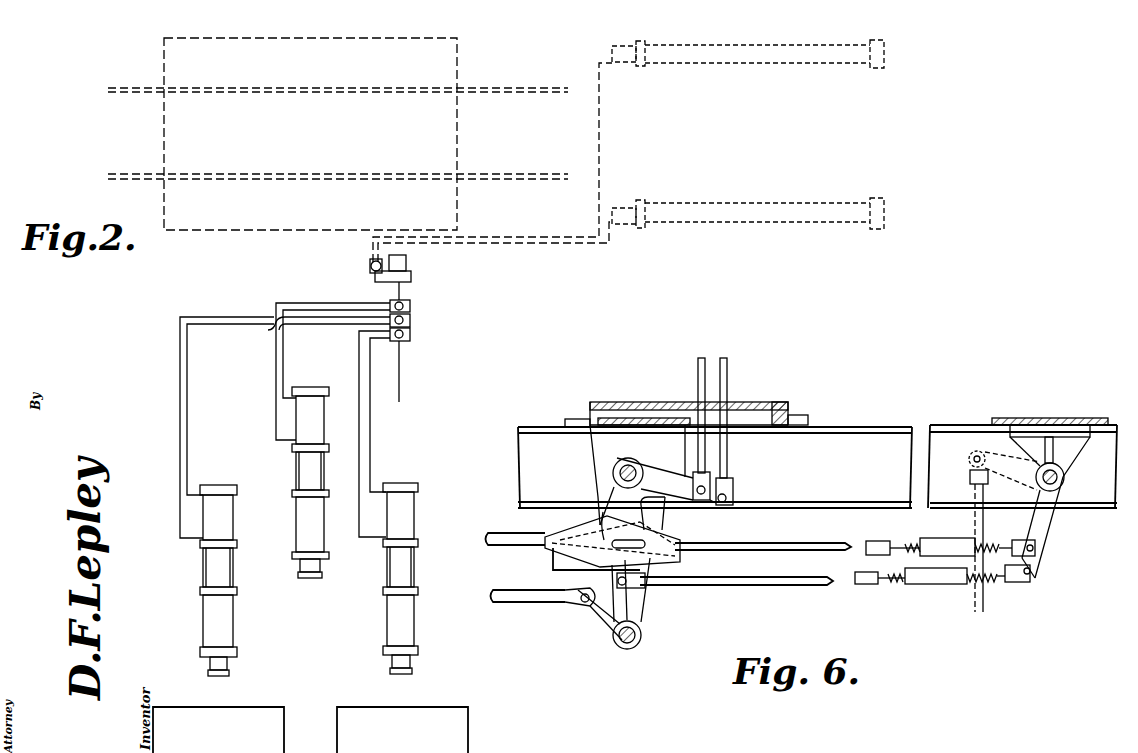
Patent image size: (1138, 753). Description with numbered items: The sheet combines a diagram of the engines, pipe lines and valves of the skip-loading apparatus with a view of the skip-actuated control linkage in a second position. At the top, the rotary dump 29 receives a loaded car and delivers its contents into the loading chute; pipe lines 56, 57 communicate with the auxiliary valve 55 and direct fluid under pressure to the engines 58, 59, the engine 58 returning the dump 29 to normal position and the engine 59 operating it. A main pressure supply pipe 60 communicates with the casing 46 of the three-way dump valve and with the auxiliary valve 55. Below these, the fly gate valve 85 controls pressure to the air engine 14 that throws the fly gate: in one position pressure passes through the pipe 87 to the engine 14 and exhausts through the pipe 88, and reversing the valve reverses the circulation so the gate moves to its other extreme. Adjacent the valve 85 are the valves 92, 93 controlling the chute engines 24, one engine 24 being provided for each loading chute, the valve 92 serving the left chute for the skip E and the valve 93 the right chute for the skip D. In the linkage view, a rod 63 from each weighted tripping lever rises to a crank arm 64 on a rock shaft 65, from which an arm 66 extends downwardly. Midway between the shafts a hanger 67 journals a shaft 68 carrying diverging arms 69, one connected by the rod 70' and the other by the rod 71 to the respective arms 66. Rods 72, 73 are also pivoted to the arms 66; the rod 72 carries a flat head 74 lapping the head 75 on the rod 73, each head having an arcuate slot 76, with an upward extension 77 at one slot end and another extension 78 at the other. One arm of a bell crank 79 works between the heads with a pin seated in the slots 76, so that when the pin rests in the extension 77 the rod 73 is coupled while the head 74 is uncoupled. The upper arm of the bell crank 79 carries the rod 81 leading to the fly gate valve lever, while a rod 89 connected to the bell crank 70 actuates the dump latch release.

In FIG. 2, the rotary dump 29 is at (458, 62).
In FIG. 2, the pipe line 56 is at (512, 236).
In FIG. 2, the pipe line 57 is at (539, 245).
In FIG. 2, the engine 58 is at (700, 66).
In FIG. 2, the engine 59 is at (700, 202).
In FIG. 2, the auxiliary valve 55 is at (369, 266).
In FIG. 2, the casing of three-way dump valve 46 is at (407, 263).
In FIG. 2, the valve 85 is at (410, 304).
In FIG. 2, the valve 92 is at (410, 320).
In FIG. 2, the valve 93 is at (410, 334).
In FIG. 2, the main pressure supply pipe 60 is at (401, 392).
In FIG. 2, the pipe 87 is at (283, 302).
In FIG. 2, the pipe 88 is at (285, 356).
In FIG. 2, the engine 24 is at (208, 565).
In FIG. 2, the air engine 14 is at (302, 513).
In FIG. 2, the skip E is at (256, 709).
In FIG. 2, the skip D is at (460, 712).
In FIG. 6, the hanger 67 is at (592, 455).
In FIG. 6, the bell crank 79 is at (652, 475).
In FIG. 6, the upward extension 77 is at (603, 510).
In FIG. 6, the rod 81 is at (698, 367).
In FIG. 6, the rod 89 is at (727, 373).
In FIG. 6, the bell crank 70 is at (748, 486).
In FIG. 6, the rod 73 is at (497, 523).
In FIG. 6, the rod 71 is at (499, 604).
In FIG. 6, the head 75 is at (578, 536).
In FIG. 6, the flat head 74 is at (558, 562).
In FIG. 6, the arcuate slot 76 is at (582, 560).
In FIG. 6, the diverging arm 69 is at (629, 607).
In FIG. 6, the shaft 68 is at (617, 647).
In FIG. 6, the rod 72 is at (825, 543).
In FIG. 6, the upward extension 78 is at (690, 566).
In FIG. 6, the rod 70' is at (823, 592).
In FIG. 6, the rock shaft 65 is at (1066, 477).
In FIG. 6, the arm 66 is at (1050, 535).
In FIG. 6, the crank arm 64 is at (992, 445).
In FIG. 6, the rod 63 is at (991, 642).